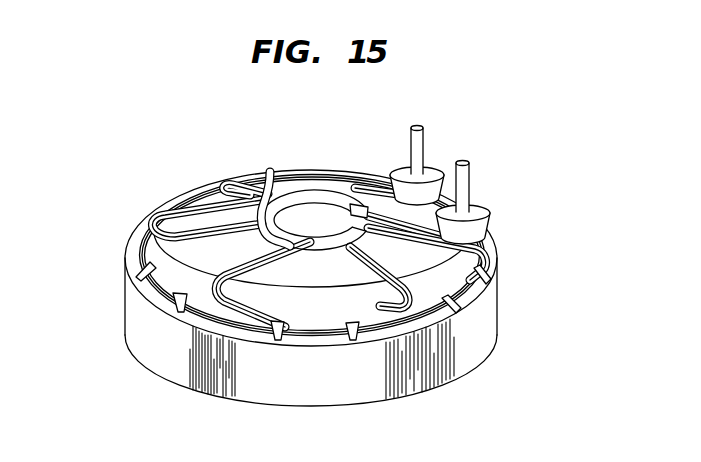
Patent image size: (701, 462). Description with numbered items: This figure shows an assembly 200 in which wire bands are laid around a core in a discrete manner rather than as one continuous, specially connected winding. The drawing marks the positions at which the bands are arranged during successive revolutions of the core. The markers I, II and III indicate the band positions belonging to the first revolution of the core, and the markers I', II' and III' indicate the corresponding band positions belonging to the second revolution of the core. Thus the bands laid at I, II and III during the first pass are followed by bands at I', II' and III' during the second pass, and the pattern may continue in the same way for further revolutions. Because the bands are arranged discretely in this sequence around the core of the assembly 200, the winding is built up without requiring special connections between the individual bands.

The coil assembly 200 is at (118, 216).
The first-revolution band position I is at (485, 301).
The second-revolution band position I' is at (315, 383).
The first-revolution band position II is at (282, 255).
The second-revolution band position II' is at (207, 189).
The first-revolution band position III is at (314, 183).
The second-revolution band position III' is at (472, 192).